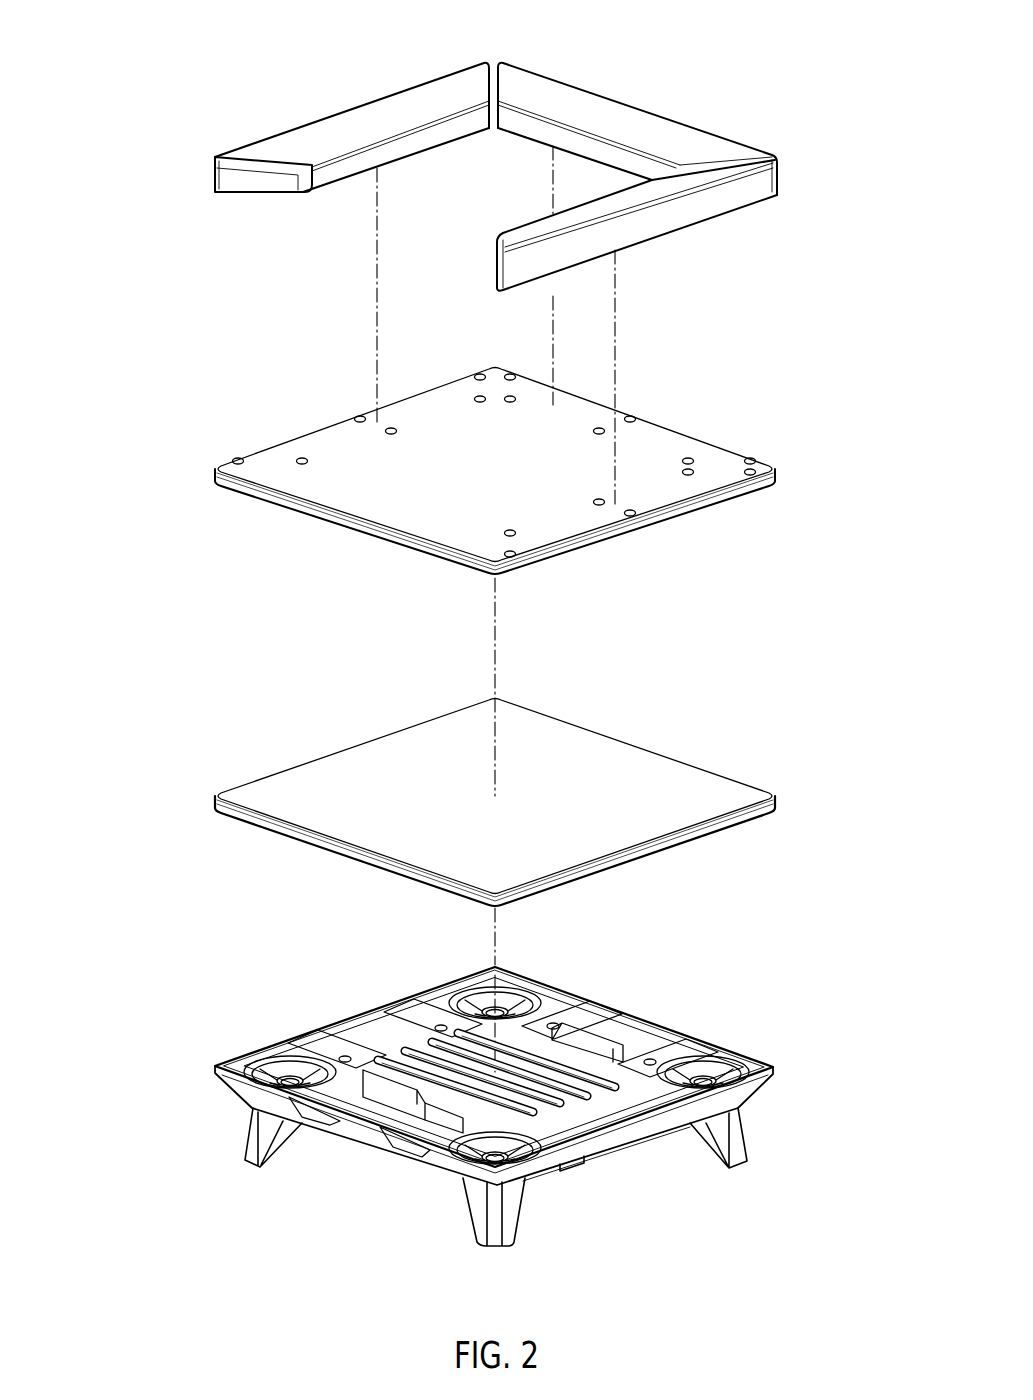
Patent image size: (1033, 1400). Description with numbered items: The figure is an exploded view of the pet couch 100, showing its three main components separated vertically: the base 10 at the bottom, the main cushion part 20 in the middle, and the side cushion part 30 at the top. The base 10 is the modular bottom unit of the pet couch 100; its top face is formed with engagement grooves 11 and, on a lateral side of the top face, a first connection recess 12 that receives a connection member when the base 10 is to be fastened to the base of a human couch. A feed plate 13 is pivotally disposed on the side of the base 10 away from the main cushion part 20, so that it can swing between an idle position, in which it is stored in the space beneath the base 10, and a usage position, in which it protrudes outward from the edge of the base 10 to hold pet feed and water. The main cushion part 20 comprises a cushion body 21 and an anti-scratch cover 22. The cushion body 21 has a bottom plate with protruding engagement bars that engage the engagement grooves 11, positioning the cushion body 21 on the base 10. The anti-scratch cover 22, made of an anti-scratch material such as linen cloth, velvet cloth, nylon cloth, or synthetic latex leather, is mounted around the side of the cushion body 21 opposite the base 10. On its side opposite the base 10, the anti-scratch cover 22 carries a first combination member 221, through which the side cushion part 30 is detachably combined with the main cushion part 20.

The pet couch 100 is at (117, 20).
The base 10 is at (494, 1100).
The engagement grooves 11 is at (450, 1085).
The first connection recess 12 is at (360, 1052).
The feed plate 13 is at (488, 1189).
The main cushion part 20 is at (135, 367).
The cushion body 21 is at (290, 785).
The anti-scratch cover 22 is at (497, 462).
The first combination member 221 is at (748, 458).
The side cushion part 30 is at (703, 105).